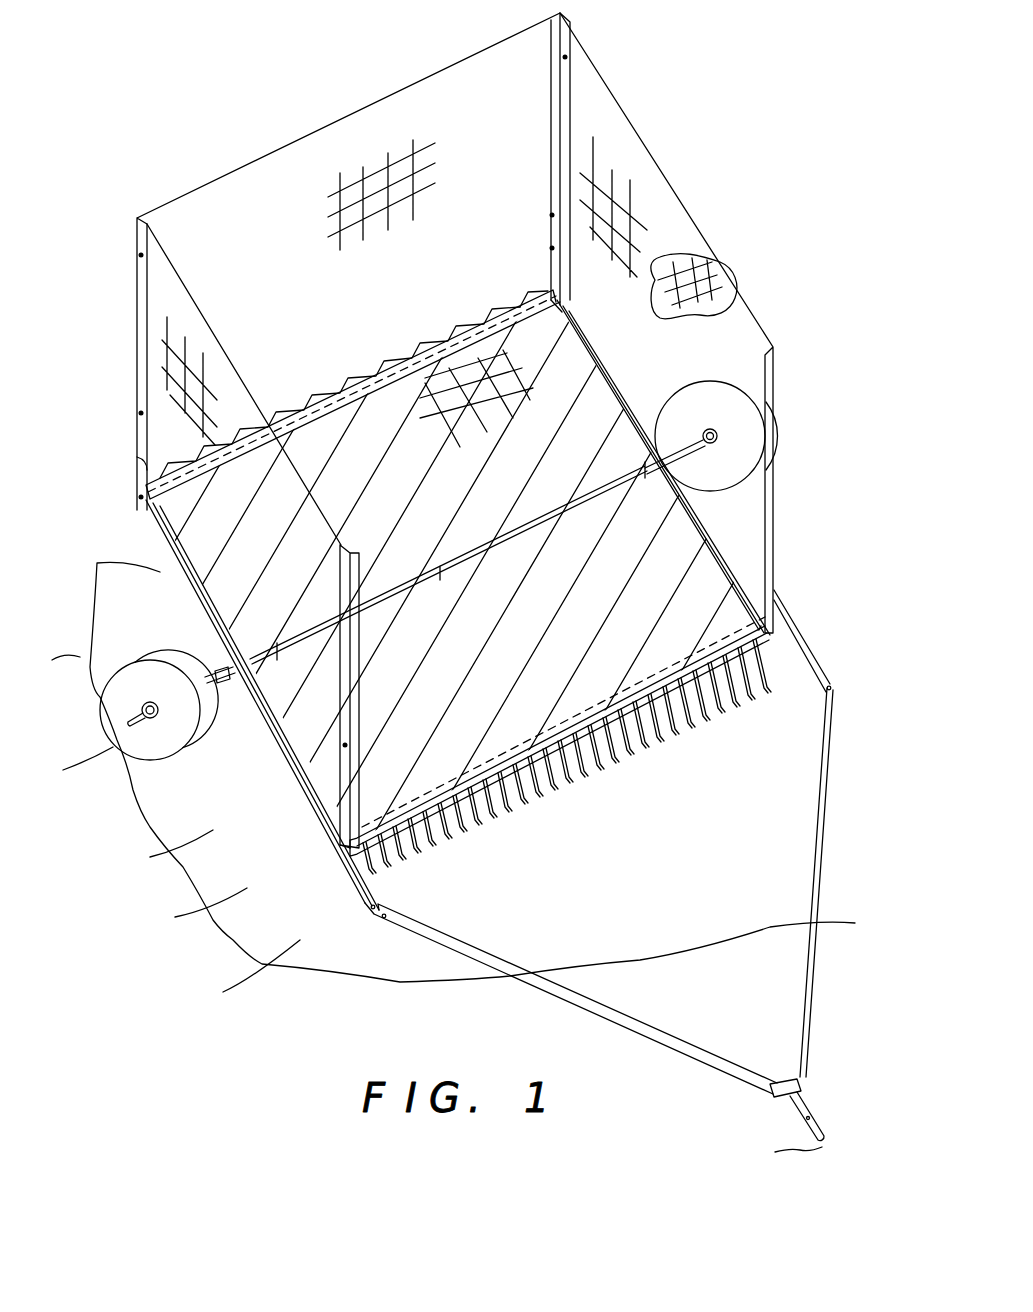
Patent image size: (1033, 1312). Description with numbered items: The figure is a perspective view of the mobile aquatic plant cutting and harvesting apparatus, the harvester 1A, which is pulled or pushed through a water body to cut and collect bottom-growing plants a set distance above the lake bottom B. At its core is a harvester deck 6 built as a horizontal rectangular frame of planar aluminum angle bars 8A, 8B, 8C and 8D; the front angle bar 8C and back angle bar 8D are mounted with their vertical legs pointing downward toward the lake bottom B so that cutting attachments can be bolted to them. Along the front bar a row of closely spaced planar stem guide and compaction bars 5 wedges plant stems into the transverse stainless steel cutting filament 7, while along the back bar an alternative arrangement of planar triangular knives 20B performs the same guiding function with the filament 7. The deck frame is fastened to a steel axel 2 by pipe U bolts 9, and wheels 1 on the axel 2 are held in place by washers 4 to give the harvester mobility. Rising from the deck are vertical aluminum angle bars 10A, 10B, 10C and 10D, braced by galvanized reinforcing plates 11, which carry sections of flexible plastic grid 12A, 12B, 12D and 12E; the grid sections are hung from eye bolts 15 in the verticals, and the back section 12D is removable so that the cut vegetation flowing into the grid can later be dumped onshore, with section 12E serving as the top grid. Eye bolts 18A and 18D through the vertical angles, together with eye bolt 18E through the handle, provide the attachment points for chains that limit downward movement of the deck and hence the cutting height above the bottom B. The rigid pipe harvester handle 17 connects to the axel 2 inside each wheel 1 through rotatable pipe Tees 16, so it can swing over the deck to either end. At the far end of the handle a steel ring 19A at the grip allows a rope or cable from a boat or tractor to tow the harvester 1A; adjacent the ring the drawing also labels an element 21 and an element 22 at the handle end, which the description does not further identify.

The wheels 1 is at (755, 448).
The harvester 1A is at (690, 122).
The axel 2 is at (130, 707).
The washers 4 is at (707, 432).
The planar stem guide and compaction bars 5 is at (583, 780).
The harvester deck 6 is at (484, 604).
The cutting filament 7 is at (433, 338).
The horizontal aluminum angle bar 8A is at (300, 747).
The horizontal aluminum angle bar 8B is at (683, 527).
The front aluminum angle bar 8C is at (515, 743).
The back aluminum angle bar 8D is at (353, 394).
The U bolts 9 is at (640, 470).
The vertical aluminum angle bar 10A is at (355, 700).
The vertical aluminum angle bar 10B is at (137, 315).
The vertical aluminum angle bar 10C is at (775, 375).
The vertical aluminum angle bar 10D is at (567, 80).
The reinforcing plates 11 is at (570, 297).
The plastic grid section 12A is at (170, 360).
The plastic grid section 12B is at (625, 205).
The back plastic grid section 12D is at (372, 180).
The top plastic grid 12E is at (718, 272).
The eye bolt 15 is at (565, 57).
The pipe Tees 16 is at (673, 433).
The harvester handle 17 is at (812, 960).
The eye bolt 18A is at (345, 747).
The eye bolt 18D is at (141, 413).
The eye bolt 18E is at (552, 215).
The steel ring 19A is at (773, 1100).
The planar triangular knives 20B is at (357, 380).
The ground 21 is at (797, 1150).
The hitch tongue 22 is at (815, 1118).
The lake bottom B is at (220, 956).